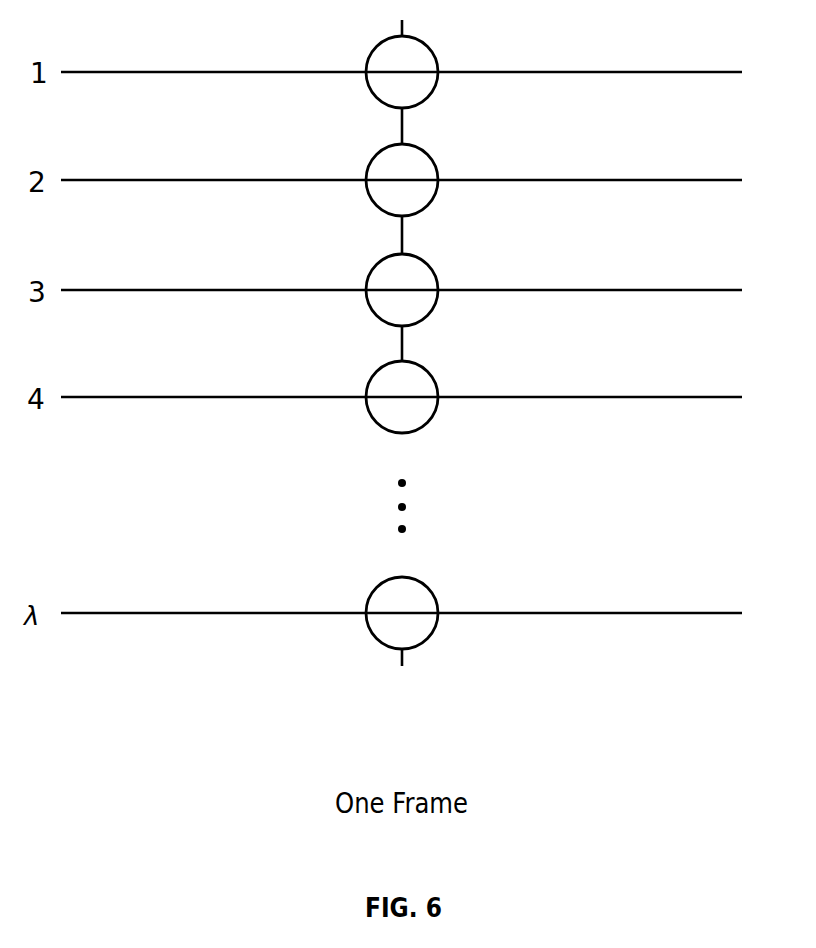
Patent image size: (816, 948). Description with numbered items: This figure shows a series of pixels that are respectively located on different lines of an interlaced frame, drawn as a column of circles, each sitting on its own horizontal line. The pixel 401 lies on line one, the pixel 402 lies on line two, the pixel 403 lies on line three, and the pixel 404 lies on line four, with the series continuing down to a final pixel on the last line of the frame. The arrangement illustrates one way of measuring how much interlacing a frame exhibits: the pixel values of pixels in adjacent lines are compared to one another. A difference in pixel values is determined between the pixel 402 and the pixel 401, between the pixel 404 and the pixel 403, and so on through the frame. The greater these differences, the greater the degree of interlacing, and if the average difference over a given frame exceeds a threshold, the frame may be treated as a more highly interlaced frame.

The pixel 401 is at (412, 53).
The pixel 402 is at (412, 161).
The pixel 403 is at (412, 271).
The pixel 404 is at (412, 378).